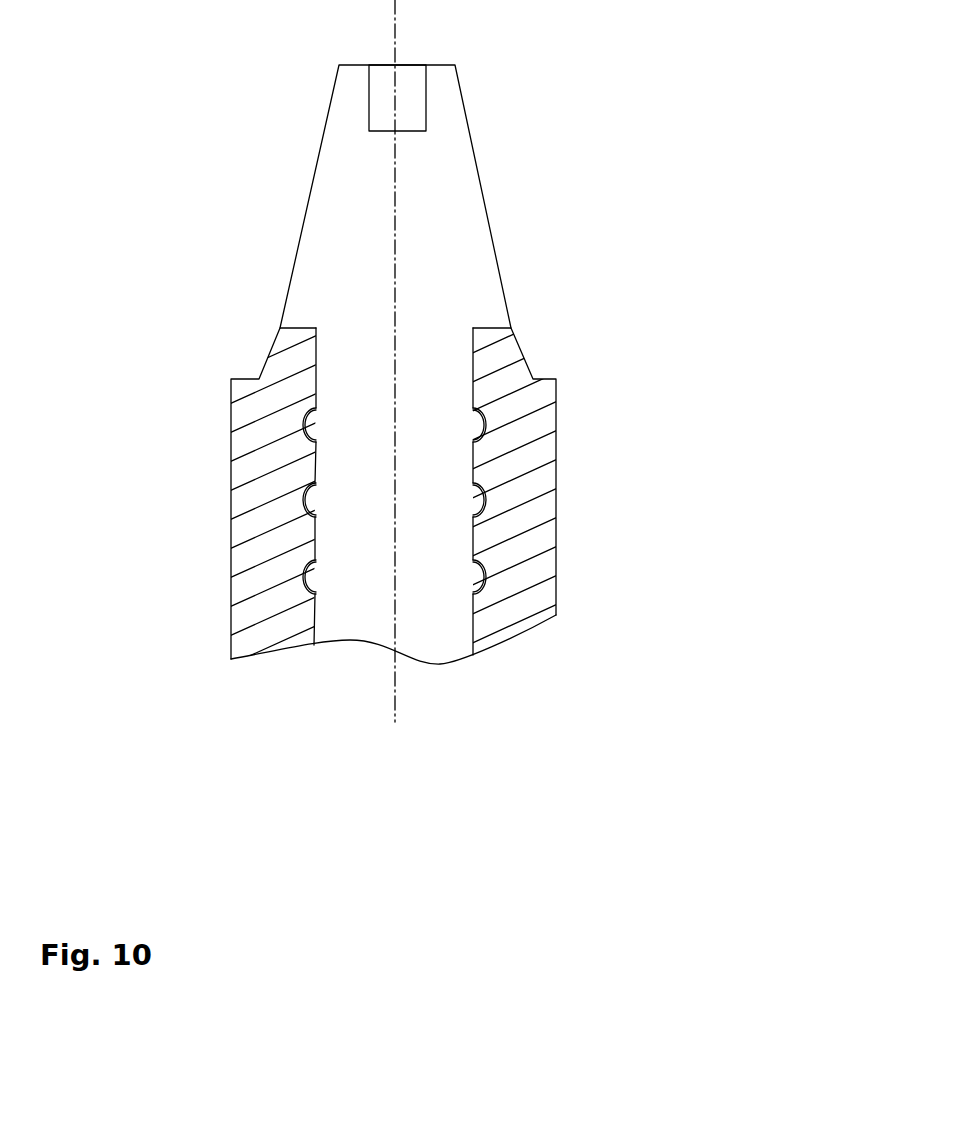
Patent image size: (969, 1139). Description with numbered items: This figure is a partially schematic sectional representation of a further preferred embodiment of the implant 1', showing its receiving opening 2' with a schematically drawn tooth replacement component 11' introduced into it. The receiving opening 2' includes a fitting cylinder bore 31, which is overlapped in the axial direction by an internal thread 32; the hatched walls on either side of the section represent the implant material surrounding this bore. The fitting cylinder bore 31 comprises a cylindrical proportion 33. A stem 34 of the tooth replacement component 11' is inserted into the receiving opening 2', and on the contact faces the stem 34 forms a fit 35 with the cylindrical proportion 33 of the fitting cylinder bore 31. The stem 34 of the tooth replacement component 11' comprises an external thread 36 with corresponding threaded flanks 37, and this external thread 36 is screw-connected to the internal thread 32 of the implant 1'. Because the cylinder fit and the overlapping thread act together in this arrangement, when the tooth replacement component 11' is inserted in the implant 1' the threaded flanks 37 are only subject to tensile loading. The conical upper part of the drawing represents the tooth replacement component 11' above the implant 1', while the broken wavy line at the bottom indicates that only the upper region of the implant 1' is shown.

The tooth replacement component 11' is at (481, 361).
The receiving opening 2' is at (503, 490).
The external thread 36 is at (503, 490).
The threaded flanks 37 is at (489, 399).
The internal thread 32 is at (488, 415).
The cylindrical proportion 33 is at (180, 455).
The fit 35 is at (300, 384).
The stem 34 is at (360, 633).
The fitting cylinder bore 31 is at (473, 657).
The implant 1' is at (441, 692).